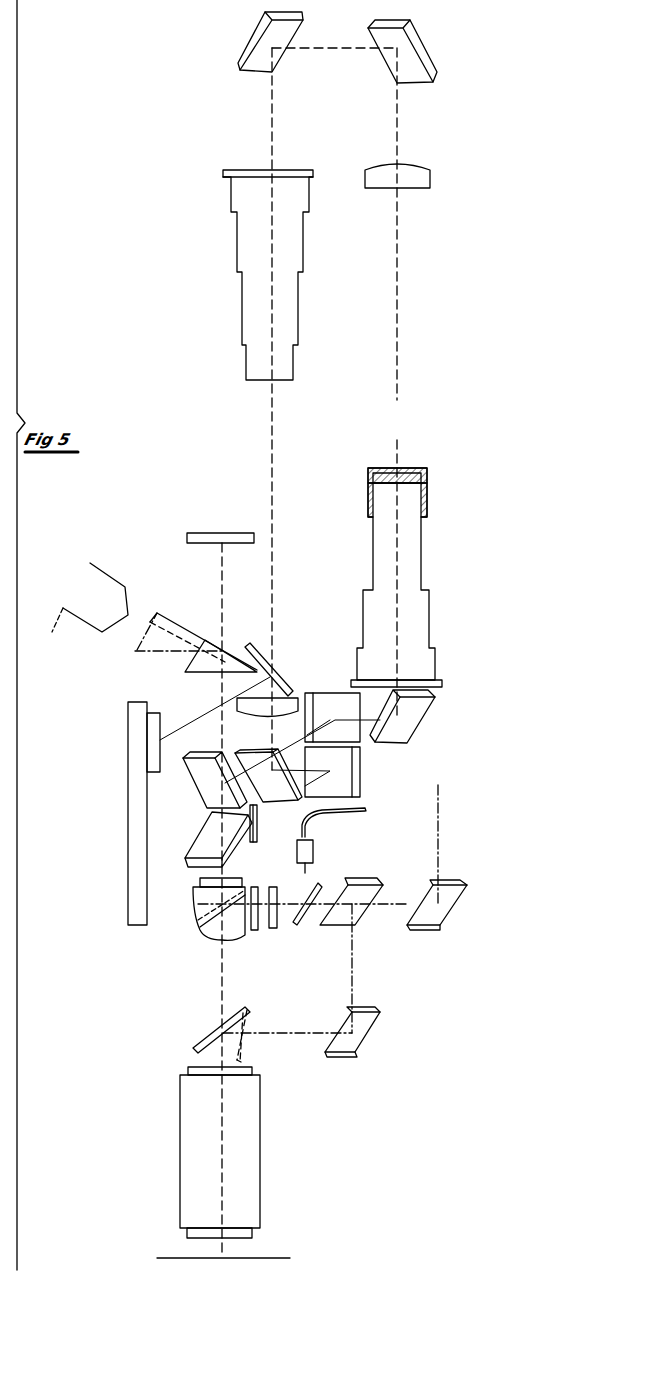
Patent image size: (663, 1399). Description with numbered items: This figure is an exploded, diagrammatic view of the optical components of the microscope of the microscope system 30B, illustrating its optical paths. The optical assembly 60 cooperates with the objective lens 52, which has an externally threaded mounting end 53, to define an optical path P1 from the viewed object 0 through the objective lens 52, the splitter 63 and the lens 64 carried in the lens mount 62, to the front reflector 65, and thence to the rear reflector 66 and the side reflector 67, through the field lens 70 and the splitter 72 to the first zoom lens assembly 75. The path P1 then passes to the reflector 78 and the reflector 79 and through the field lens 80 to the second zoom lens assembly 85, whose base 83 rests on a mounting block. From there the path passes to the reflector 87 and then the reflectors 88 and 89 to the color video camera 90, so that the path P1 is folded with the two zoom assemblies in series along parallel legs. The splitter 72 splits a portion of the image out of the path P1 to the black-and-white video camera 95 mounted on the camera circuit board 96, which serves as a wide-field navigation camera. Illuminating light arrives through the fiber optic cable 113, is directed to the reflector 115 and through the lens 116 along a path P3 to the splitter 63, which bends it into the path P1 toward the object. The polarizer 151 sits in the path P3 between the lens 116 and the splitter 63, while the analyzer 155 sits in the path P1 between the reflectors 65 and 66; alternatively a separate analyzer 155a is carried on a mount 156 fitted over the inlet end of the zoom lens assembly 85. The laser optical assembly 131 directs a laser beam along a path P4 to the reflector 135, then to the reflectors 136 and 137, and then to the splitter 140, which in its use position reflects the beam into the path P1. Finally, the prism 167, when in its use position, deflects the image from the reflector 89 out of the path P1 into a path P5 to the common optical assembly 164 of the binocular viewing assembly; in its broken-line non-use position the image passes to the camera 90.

The viewed object 0 is at (172, 1257).
The microscope system 30B is at (207, 111).
The objective lens 52 is at (180, 1115).
The externally threaded mounting end 53 is at (188, 1070).
The optical assembly 60 is at (238, 452).
The lens mount 62 is at (202, 932).
The splitter 63 is at (193, 902).
The lens 64 is at (200, 880).
The front reflector 65 is at (200, 837).
The rear reflector 66 is at (360, 767).
The side reflector 67 is at (288, 803).
The field lens 70 is at (262, 714).
The splitter 72 is at (285, 677).
The first zoom lens assembly 75 is at (222, 285).
The reflector 78 is at (255, 35).
The reflector 79 is at (423, 55).
The field lens 80 is at (418, 163).
The base 83 is at (440, 679).
The second zoom lens assembly 85 is at (385, 559).
The reflector 87 is at (422, 712).
The reflector 88 is at (333, 693).
The reflector 89 is at (198, 776).
The color video camera 90 is at (205, 533).
The black-and-white video camera 95 is at (155, 717).
The camera circuit board 96 is at (128, 786).
The fiber optic cable 113 is at (340, 817).
The reflector 115 is at (302, 921).
The lens 116 is at (272, 887).
The laser optical assembly 131 is at (393, 972).
The reflector 135 is at (430, 922).
The reflector 136 is at (360, 915).
The reflector 137 is at (358, 1050).
The splitter 140 is at (202, 1040).
The polarizer 151 is at (255, 931).
The analyzer 155 is at (253, 840).
The analyzer 155a is at (403, 468).
The mount 156 is at (368, 500).
The common optical assembly 164 is at (83, 611).
The prism 167 is at (178, 625).
The optical path P1 is at (397, 400).
The illuminating light path P3 is at (305, 870).
The laser beam path P4 is at (437, 837).
The optical path P5 is at (125, 622).